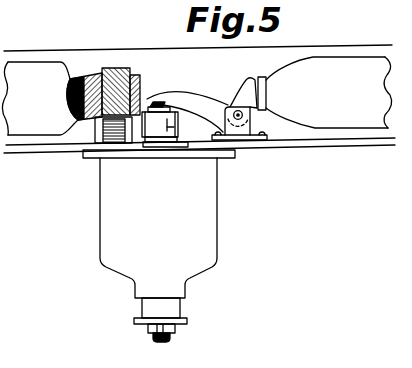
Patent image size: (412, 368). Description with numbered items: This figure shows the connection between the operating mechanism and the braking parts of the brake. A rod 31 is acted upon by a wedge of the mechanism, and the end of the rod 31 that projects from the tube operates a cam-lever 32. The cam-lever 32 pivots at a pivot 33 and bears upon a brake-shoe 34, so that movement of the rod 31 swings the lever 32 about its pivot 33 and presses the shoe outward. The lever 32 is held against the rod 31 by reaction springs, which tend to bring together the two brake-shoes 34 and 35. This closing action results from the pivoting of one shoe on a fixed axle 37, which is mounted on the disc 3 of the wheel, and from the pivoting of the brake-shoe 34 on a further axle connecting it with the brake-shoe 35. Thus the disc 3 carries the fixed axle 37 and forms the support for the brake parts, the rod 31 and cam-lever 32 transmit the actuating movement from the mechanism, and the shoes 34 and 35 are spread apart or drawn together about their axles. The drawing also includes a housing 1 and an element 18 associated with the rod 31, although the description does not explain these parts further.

The housing 1 is at (204, 217).
The disc 3 is at (52, 147).
The pin 18 is at (175, 128).
The rod 31 is at (157, 102).
The cam-lever 32 is at (199, 98).
The pivot 33 is at (239, 118).
The brake-shoe 34 is at (339, 121).
The brake-shoe 35 is at (33, 67).
The fixed axle 37 is at (117, 70).